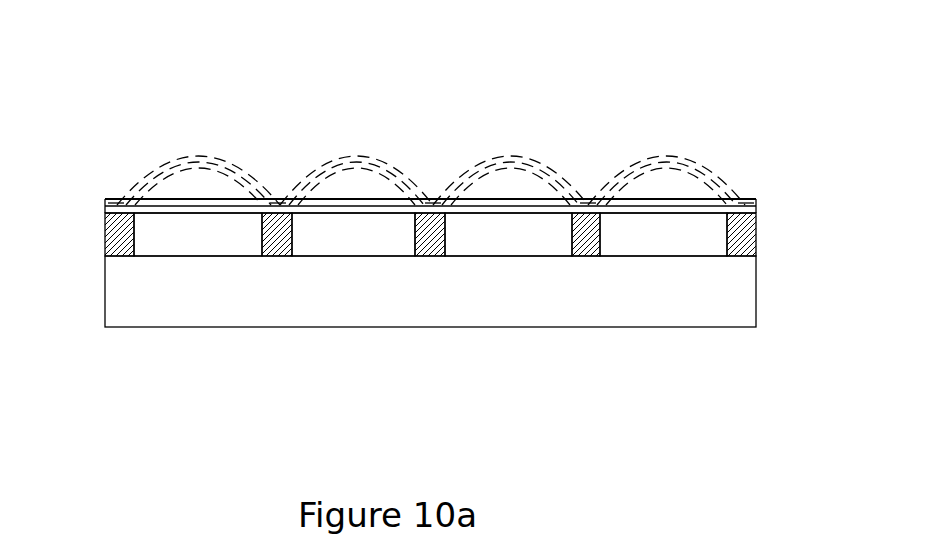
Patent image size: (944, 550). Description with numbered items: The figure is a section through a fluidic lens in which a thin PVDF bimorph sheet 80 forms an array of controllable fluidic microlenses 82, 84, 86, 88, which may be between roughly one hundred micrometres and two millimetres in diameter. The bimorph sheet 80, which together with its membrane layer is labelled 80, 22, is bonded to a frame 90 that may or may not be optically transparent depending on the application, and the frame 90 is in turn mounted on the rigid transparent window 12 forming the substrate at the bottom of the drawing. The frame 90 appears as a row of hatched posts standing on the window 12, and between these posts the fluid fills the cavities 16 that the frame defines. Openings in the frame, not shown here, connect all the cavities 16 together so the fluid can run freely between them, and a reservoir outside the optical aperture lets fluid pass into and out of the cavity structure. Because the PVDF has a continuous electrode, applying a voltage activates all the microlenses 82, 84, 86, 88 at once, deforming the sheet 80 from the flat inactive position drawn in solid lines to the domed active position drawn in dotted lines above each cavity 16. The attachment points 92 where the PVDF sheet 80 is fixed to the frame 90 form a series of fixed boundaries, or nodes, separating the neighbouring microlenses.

The rigid transparent window 12 is at (458, 305).
The cavities 16 is at (157, 237).
The membrane layer 22 is at (758, 207).
The PVDF bimorph sheet 80 is at (758, 199).
The controllable fluidic microlens 82 is at (212, 193).
The controllable fluidic microlens 84 is at (365, 190).
The controllable fluidic microlens 86 is at (510, 187).
The controllable fluidic microlens 88 is at (677, 188).
The frame 90 is at (748, 237).
The attachment points 92 is at (115, 205).